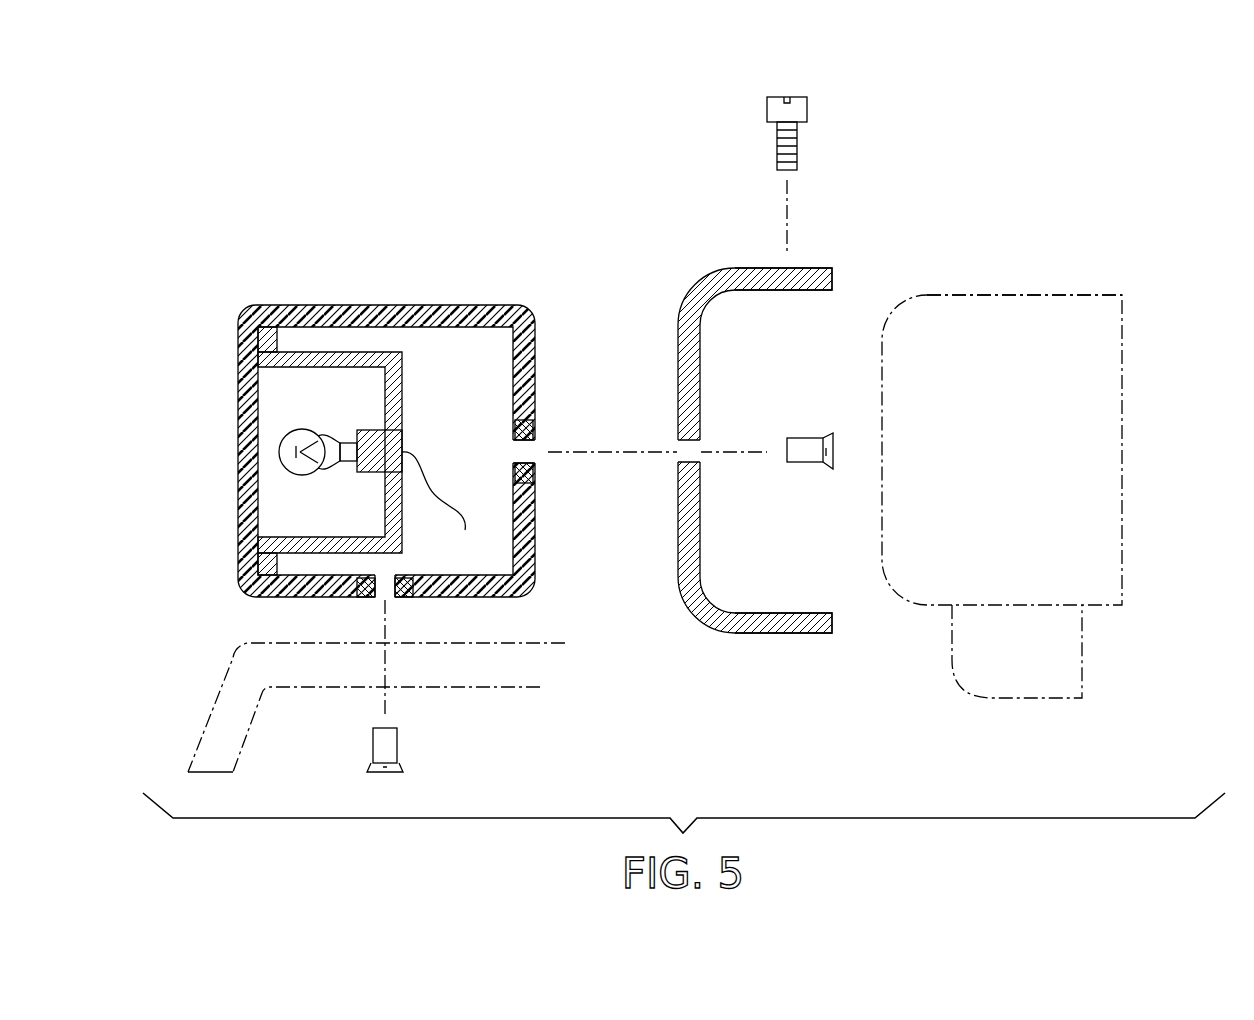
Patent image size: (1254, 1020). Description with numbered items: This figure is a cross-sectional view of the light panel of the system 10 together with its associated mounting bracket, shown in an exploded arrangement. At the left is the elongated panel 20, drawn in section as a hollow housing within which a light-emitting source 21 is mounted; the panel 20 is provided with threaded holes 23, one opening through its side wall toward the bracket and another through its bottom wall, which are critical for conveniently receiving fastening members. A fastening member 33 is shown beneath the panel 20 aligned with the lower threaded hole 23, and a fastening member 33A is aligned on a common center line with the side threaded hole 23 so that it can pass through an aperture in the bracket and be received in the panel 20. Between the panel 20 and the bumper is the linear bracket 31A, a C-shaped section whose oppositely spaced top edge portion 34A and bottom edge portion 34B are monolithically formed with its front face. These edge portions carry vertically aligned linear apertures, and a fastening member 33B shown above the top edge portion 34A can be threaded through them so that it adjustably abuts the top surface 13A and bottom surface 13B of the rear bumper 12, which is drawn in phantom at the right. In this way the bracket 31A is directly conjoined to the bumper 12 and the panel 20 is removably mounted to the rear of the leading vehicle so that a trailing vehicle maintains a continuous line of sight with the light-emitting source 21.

The system 10 is at (1082, 178).
The rear bumper 12 is at (882, 487).
The top surface 13A is at (1023, 297).
The bottom surface 13B is at (1022, 607).
The elongated panel 20 is at (467, 307).
The light-emitting source 21 is at (278, 449).
The threaded hole 23 is at (535, 440).
The linear bracket 31A is at (678, 368).
The fastening member 33 is at (397, 748).
The fastening member 33A is at (832, 435).
The fastening member 33B is at (807, 110).
The top edge portion 34A is at (817, 268).
The bottom edge portion 34B is at (747, 635).